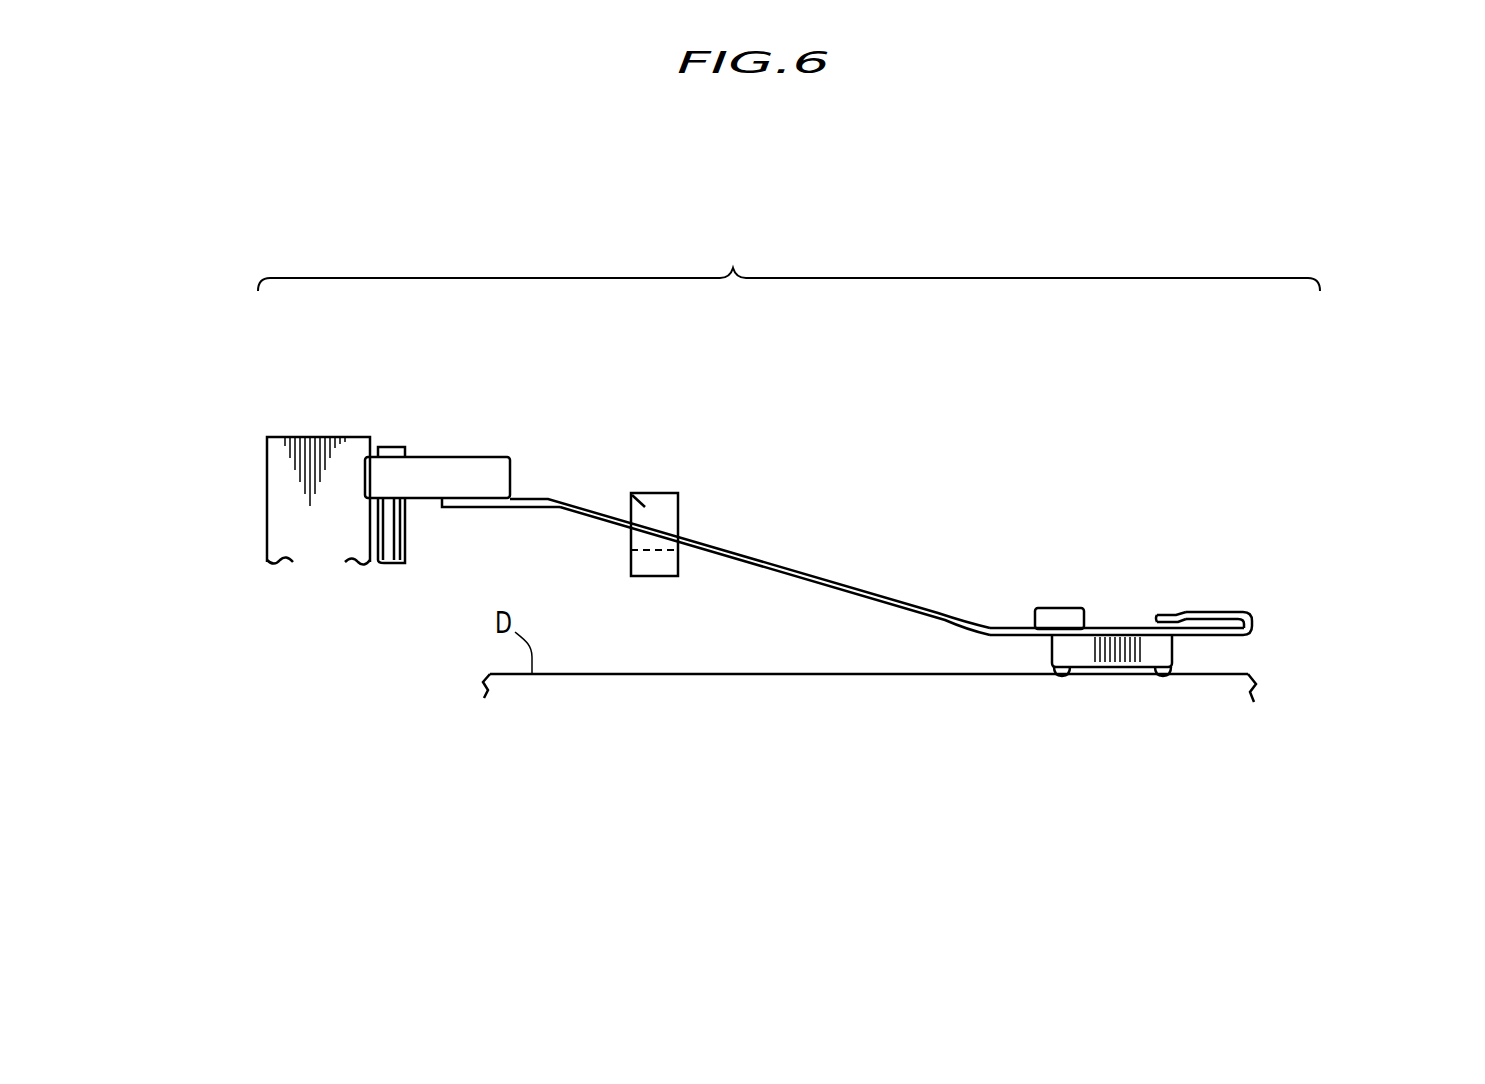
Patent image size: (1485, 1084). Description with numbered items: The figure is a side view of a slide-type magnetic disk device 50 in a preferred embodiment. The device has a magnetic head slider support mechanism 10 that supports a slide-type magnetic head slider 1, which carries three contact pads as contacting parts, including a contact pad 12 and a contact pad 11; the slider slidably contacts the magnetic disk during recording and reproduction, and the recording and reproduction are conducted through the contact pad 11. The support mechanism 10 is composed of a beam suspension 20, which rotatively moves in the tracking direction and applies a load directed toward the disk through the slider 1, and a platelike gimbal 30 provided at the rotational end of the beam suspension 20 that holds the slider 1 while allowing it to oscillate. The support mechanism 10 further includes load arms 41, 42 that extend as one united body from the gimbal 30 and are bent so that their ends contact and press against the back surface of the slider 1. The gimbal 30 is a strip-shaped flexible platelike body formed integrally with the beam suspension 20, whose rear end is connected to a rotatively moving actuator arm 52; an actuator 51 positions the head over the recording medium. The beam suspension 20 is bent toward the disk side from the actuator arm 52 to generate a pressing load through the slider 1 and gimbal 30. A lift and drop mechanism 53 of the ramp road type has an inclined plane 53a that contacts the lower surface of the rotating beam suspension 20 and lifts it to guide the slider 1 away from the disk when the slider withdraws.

The magnetic disk device 50 is at (735, 258).
The actuator 51 is at (283, 438).
The actuator arm 52 is at (453, 457).
The lift and drop mechanism 53 is at (663, 493).
The inclined plane 53a is at (632, 495).
The magnetic head slider support mechanism 10 is at (900, 372).
The beam suspension 20 is at (678, 531).
The gimbal 30 is at (973, 626).
The load arm 42 is at (1057, 607).
The load arm 41 is at (1200, 612).
The slide-type magnetic head slider 1 is at (1115, 667).
The contact pad 12 is at (1062, 676).
The contact pad 11 is at (1165, 676).